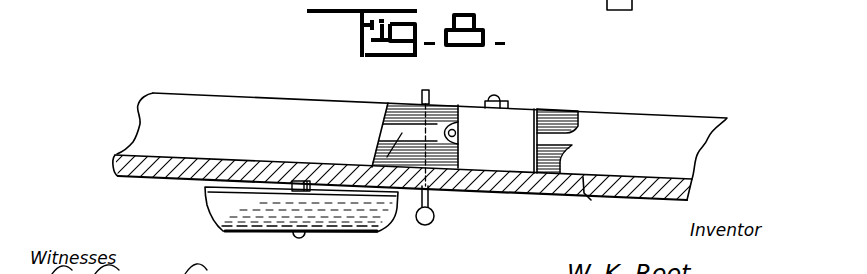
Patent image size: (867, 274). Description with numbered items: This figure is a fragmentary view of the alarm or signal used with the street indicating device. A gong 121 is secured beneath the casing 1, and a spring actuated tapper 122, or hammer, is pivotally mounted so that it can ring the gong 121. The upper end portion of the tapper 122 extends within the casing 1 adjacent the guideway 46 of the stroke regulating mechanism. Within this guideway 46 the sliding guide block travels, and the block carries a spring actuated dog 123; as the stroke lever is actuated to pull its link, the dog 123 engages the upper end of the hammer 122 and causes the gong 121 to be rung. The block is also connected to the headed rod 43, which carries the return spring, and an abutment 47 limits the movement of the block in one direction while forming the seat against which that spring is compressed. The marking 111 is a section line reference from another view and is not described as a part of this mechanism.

The guideway 46 is at (292, 104).
The abutment 47 is at (497, 139).
The headed rod 43 is at (568, 139).
The spring actuated dog 123 is at (512, 88).
The spring actuated tapper 122 is at (427, 201).
The gong 121 is at (350, 238).
The casing 1 is at (593, 201).
The lever 111 is at (551, 3).